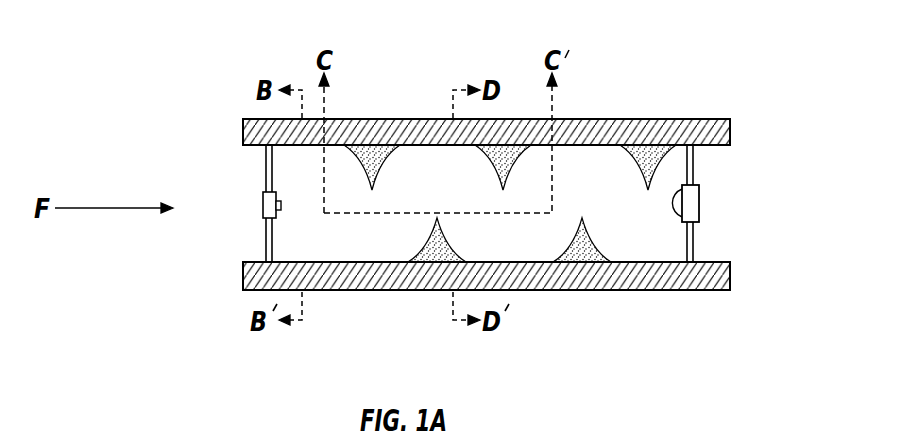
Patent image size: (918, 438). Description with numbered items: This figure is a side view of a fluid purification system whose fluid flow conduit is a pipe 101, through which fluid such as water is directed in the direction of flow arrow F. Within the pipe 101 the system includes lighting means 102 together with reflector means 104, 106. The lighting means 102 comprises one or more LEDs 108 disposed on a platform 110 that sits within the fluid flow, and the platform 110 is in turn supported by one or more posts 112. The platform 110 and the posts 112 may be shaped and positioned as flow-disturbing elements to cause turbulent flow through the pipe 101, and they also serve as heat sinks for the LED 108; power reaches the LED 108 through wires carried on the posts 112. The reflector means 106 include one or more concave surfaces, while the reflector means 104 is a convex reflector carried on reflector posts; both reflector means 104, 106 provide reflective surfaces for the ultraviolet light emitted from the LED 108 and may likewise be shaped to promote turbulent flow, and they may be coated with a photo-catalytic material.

The pipe 101 is at (702, 127).
The lighting means 102 is at (231, 196).
The reflector means 104 is at (732, 201).
The reflector means 106 is at (592, 240).
The LED 108 is at (281, 206).
The platform 110 is at (263, 203).
The posts 112 is at (266, 255).